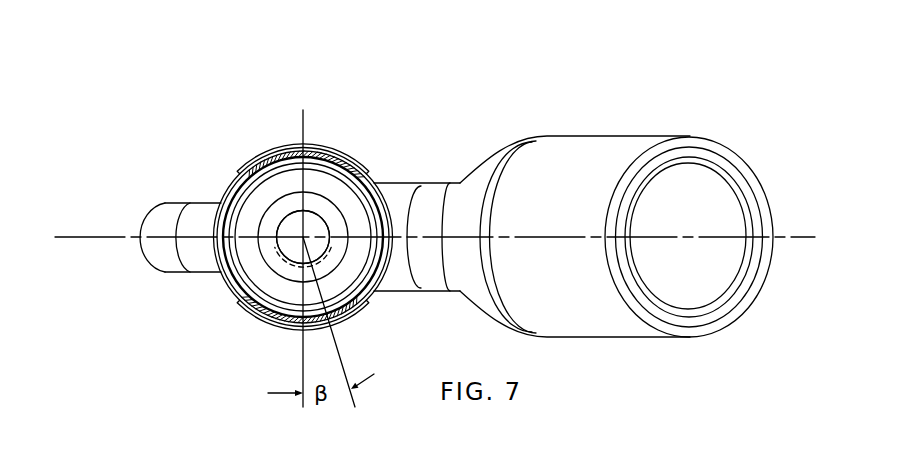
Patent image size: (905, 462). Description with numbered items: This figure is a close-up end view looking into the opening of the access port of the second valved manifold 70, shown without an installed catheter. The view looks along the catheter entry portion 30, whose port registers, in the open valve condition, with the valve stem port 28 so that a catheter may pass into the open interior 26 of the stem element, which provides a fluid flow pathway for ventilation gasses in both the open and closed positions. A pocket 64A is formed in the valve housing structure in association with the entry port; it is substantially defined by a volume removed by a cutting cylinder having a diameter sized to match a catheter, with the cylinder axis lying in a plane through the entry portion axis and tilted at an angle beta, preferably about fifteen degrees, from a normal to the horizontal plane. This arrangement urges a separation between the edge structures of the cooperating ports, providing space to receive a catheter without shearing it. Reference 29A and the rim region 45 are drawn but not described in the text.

The second valved manifold 70 is at (597, 194).
The catheter entry portion 30 is at (253, 160).
The fluid orifice 29A is at (292, 226).
The valve stem port 28 is at (303, 237).
The pocket 64A is at (300, 265).
The open interior 26 is at (656, 212).
The body end rim 45 is at (761, 194).